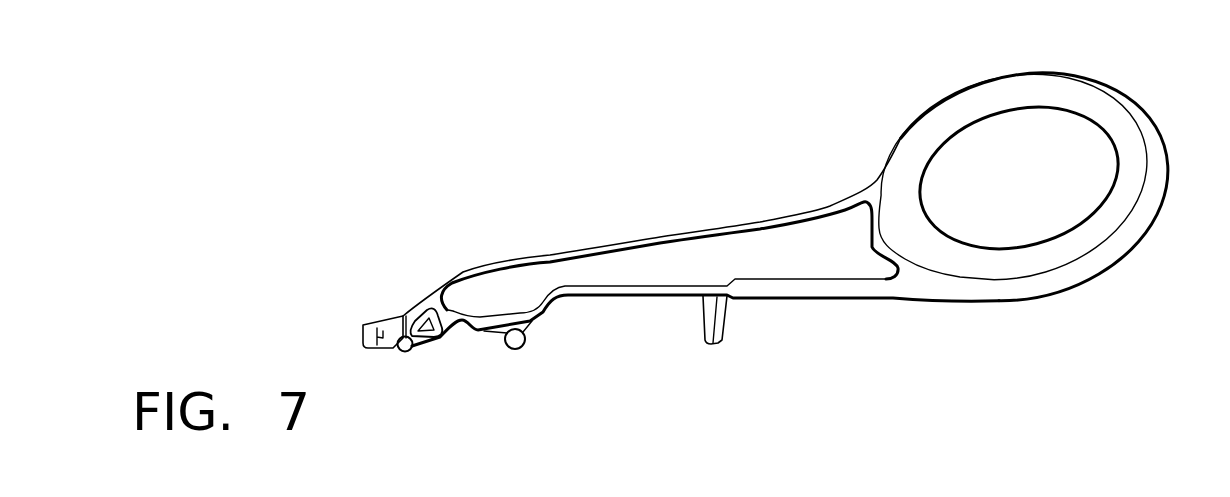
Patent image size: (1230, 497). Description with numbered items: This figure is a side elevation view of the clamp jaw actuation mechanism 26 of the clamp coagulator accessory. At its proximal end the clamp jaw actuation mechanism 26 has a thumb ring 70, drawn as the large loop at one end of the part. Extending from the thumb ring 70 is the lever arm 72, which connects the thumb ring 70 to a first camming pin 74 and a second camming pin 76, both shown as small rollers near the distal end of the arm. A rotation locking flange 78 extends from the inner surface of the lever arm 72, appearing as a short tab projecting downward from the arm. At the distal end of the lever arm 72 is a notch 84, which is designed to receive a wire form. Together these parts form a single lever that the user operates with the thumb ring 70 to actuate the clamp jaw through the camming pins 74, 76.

The clamp jaw actuation mechanism 26 is at (794, 160).
The thumb ring 70 is at (1105, 80).
The lever arm 72 is at (758, 230).
The first camming pin 74 is at (518, 349).
The second camming pin 76 is at (398, 351).
The rotation locking flange 78 is at (713, 344).
The notch 84 is at (368, 312).